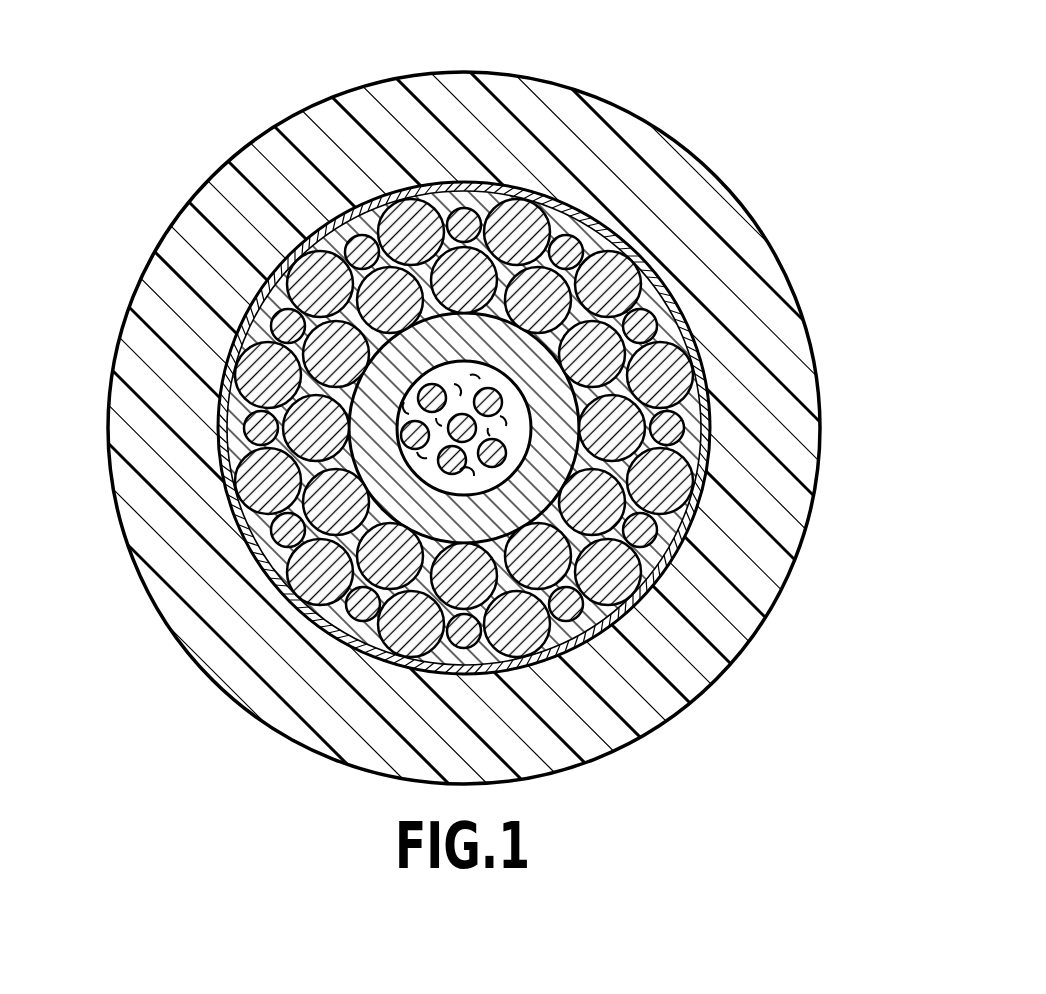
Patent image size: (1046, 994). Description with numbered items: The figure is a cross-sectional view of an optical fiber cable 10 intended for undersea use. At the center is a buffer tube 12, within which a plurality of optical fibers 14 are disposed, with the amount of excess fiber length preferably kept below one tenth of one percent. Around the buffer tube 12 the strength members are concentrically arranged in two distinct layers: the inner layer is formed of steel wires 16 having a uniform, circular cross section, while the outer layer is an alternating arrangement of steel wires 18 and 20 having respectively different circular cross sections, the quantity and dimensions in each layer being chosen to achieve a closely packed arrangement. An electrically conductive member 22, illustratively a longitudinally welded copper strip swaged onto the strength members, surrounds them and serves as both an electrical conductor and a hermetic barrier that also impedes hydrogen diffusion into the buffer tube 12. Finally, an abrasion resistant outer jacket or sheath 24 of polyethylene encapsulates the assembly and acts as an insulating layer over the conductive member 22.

The cable 10 is at (793, 208).
The buffer tube 12 is at (468, 332).
The optical fibers 14 is at (452, 460).
The steel wires 16 is at (475, 268).
The steel wires 18 is at (320, 287).
The steel wires 20 is at (263, 430).
The electrically conductive member 22 is at (227, 383).
The outer jacket or sheath 24 is at (243, 653).